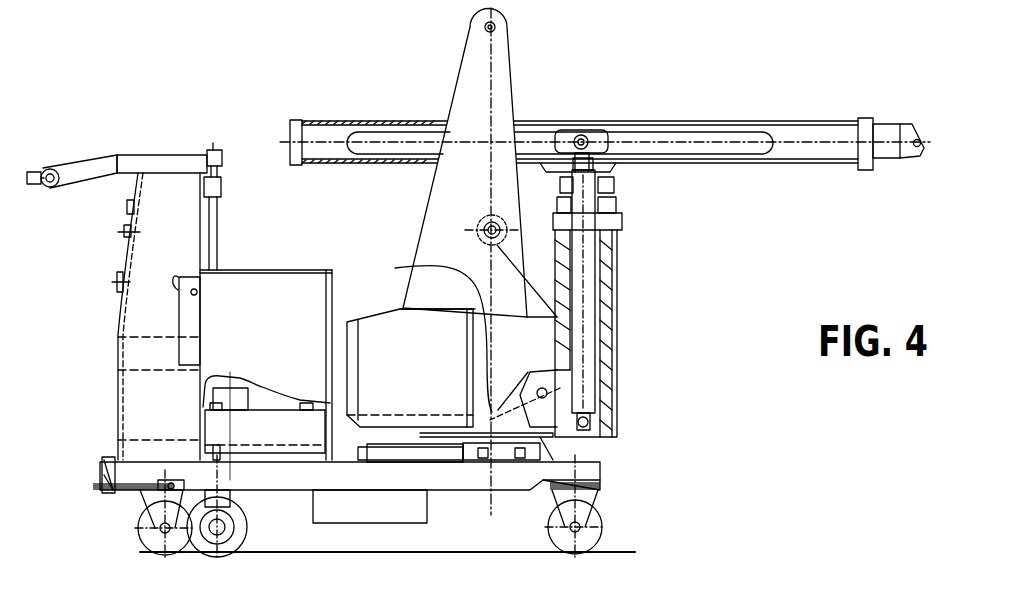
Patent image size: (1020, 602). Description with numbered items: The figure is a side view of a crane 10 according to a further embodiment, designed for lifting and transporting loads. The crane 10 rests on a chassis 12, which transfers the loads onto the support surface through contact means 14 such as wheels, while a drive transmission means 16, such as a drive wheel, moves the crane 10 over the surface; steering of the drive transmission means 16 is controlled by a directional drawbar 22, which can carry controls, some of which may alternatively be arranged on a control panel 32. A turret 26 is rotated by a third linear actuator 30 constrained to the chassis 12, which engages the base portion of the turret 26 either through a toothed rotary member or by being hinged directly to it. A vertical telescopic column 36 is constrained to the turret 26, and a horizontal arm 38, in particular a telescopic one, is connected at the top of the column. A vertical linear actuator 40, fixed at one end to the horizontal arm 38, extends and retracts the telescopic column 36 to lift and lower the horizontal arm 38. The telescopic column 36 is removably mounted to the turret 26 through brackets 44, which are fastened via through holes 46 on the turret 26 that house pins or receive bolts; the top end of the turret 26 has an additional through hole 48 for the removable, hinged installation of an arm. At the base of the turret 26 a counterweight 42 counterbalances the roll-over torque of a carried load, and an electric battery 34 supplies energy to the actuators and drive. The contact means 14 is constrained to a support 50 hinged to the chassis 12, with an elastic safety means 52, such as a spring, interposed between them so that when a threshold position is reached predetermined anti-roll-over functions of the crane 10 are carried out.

The crane 10 is at (170, 55).
The chassis 12 is at (590, 457).
The contact means 14 is at (157, 543).
The drive transmission means 16 is at (230, 538).
The directional drawbar 22 is at (60, 158).
The turret 26 is at (480, 261).
The third linear actuator 30 is at (427, 468).
The control panel 32 is at (108, 223).
The electric battery 34 is at (266, 426).
The telescopic column 36 is at (618, 350).
The horizontal arm 38 is at (800, 117).
The vertical linear actuator 40 is at (590, 245).
The counterweight 42 is at (411, 368).
The brackets 44 is at (512, 405).
The through holes 46 is at (480, 240).
The additional through hole 48 is at (484, 20).
The support 50 is at (150, 505).
The elastic safety means 52 is at (110, 457).